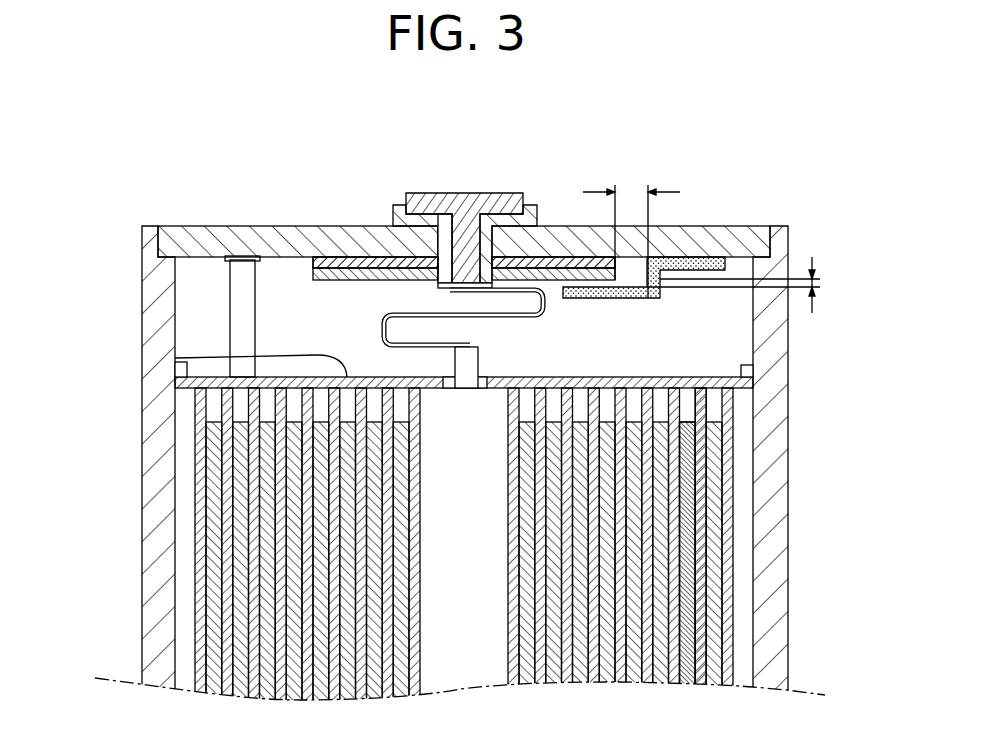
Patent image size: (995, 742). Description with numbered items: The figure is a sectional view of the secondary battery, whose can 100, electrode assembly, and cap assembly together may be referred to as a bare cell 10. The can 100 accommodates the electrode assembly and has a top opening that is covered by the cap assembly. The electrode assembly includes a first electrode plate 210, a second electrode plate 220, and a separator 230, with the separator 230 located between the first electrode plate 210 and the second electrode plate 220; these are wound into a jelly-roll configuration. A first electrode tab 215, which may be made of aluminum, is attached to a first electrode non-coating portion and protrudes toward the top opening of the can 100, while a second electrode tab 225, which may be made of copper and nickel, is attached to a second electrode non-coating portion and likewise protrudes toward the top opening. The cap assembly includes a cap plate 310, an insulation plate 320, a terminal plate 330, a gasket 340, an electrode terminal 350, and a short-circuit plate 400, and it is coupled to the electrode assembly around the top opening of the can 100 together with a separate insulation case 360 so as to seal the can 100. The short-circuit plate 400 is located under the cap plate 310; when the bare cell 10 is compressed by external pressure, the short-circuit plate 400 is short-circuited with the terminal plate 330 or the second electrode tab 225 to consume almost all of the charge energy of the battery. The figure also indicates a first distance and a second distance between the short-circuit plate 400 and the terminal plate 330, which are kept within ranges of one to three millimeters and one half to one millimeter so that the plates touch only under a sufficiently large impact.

The bare cell 10 is at (73, 151).
The can 100 is at (782, 398).
The first electrode plate 210 is at (715, 507).
The second electrode plate 220 is at (692, 585).
The separator 230 is at (700, 548).
The first electrode tab 215 is at (233, 293).
The second electrode tab 225 is at (470, 367).
The cap plate 310 is at (228, 233).
The insulation plate 320 is at (362, 257).
The terminal plate 330 is at (312, 262).
The gasket 340 is at (532, 203).
The electrode terminal 350 is at (463, 205).
The insulation case 360 is at (175, 358).
The short-circuit plate 400 is at (707, 257).